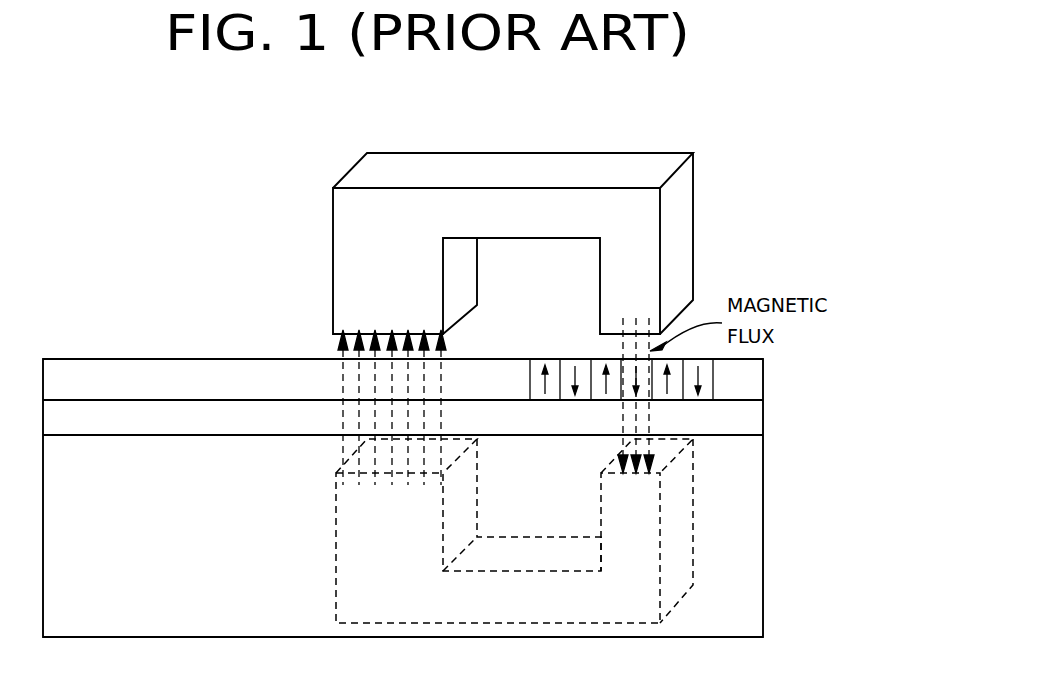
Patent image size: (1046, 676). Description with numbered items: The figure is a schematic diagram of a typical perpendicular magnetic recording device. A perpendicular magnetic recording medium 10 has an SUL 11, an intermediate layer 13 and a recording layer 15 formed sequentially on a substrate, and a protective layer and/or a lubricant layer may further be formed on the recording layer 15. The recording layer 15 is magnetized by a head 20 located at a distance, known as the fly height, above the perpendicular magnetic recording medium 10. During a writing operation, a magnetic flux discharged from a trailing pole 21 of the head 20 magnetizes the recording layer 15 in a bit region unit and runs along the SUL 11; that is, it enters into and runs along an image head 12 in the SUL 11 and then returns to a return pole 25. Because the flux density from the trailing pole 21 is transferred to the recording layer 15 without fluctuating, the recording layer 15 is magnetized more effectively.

The perpendicular magnetic recording medium 10 is at (85, 353).
The SUL 11 is at (750, 584).
The image head 12 is at (687, 518).
The intermediate layer 13 is at (755, 418).
The recording layer 15 is at (755, 381).
The head 20 is at (664, 145).
The trailing pole 21 is at (629, 275).
The return pole 25 is at (355, 252).